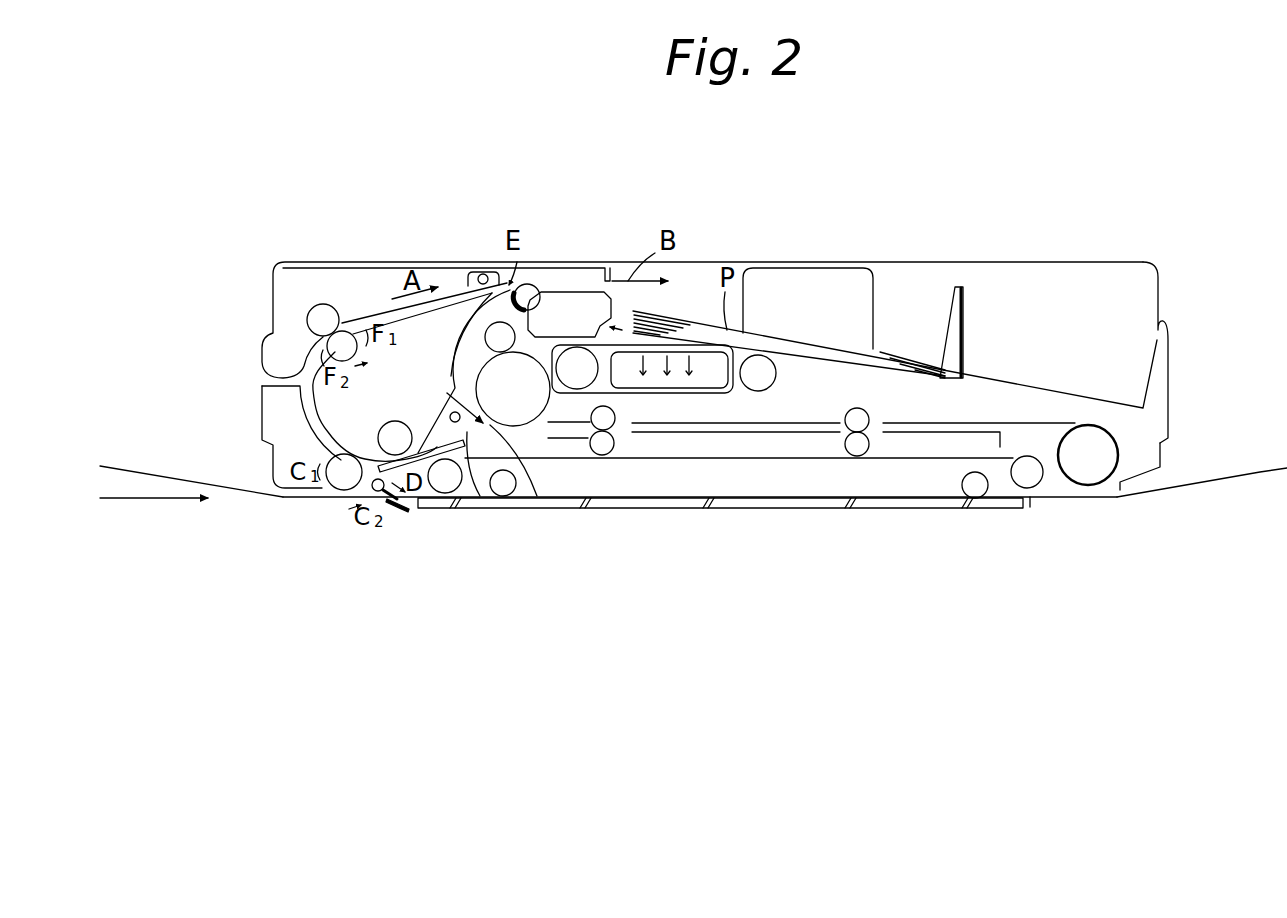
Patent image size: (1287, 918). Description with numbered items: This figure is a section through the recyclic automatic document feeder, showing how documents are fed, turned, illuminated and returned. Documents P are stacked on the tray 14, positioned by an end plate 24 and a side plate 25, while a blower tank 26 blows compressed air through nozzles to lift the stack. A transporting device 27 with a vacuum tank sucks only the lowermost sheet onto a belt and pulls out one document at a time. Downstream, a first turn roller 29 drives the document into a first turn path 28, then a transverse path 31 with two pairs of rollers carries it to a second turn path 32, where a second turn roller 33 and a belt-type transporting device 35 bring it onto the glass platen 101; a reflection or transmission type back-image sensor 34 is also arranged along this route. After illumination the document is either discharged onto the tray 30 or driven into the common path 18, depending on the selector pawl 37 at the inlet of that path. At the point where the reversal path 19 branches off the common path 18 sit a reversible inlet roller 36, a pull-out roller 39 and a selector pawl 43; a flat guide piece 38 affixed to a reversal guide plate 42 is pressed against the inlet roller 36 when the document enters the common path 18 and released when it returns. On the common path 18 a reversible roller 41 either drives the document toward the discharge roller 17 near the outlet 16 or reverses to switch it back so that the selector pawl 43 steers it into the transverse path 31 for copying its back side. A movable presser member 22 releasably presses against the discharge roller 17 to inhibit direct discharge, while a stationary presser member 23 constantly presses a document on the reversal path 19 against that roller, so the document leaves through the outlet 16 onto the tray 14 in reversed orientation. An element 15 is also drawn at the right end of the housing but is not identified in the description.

The tray 14 is at (1010, 386).
The discharge tray 15 is at (1262, 471).
The outlet 16 is at (612, 284).
The discharge roller 17 is at (514, 295).
The common path 18 is at (303, 407).
The reversal path 19 is at (452, 344).
The movable presser member 22 is at (494, 272).
The stationary presser member 23 is at (530, 285).
The end plate 24 is at (964, 327).
The side plate 25 is at (797, 285).
The blower tank 26 is at (612, 300).
The transporting device 27 is at (779, 376).
The first turn path 28 is at (447, 392).
The first turn roller 29 is at (615, 420).
The tray 30 is at (163, 468).
The transverse path 31 is at (765, 434).
The second turn path 32 is at (1120, 456).
The second turn roller 33 is at (1083, 462).
The back-image sensor 34 is at (1053, 476).
The transporting device 35 is at (921, 457).
The reversible inlet roller 36 is at (343, 490).
The selector pawl 37 is at (382, 493).
The flat guide piece 38 is at (378, 462).
The pull-out roller 39 is at (394, 419).
The reversible roller 41 is at (323, 302).
The reversal guide plate 42 is at (456, 488).
The selector pawl 43 is at (488, 430).
The glass platen 101 is at (688, 506).